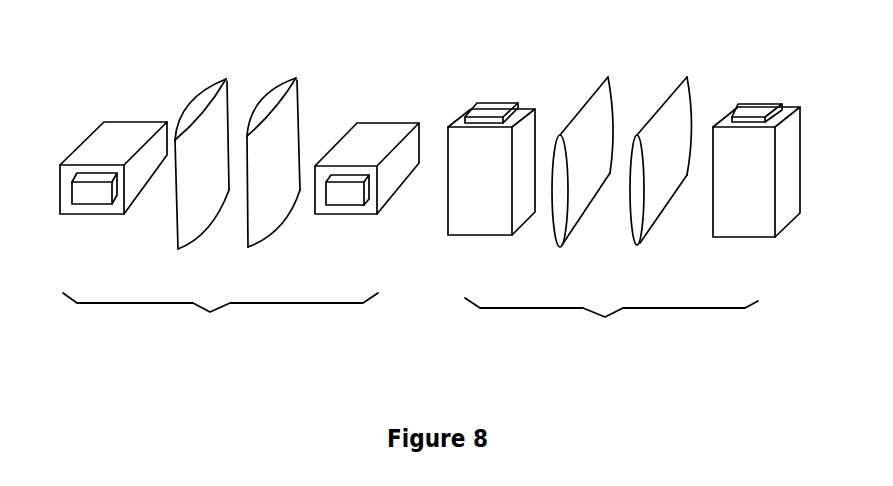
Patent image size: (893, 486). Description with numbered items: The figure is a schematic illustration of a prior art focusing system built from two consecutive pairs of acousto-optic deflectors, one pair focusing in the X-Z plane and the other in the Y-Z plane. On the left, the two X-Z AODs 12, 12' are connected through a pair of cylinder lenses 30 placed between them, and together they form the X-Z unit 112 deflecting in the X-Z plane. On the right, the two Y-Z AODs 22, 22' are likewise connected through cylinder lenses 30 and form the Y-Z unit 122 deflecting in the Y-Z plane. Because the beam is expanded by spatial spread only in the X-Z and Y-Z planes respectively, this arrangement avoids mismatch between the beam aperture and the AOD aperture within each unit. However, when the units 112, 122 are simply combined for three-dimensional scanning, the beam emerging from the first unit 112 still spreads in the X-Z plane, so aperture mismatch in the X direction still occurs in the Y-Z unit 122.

The X-Z AOD 12 is at (113, 205).
The X-Z AOD 12' is at (367, 208).
The cylinder lens 30 is at (285, 77).
The Y-Z AOD 22 is at (494, 201).
The Y-Z AOD 22' is at (756, 205).
The X-Z unit 112 is at (220, 323).
The Y-Z unit 122 is at (611, 328).